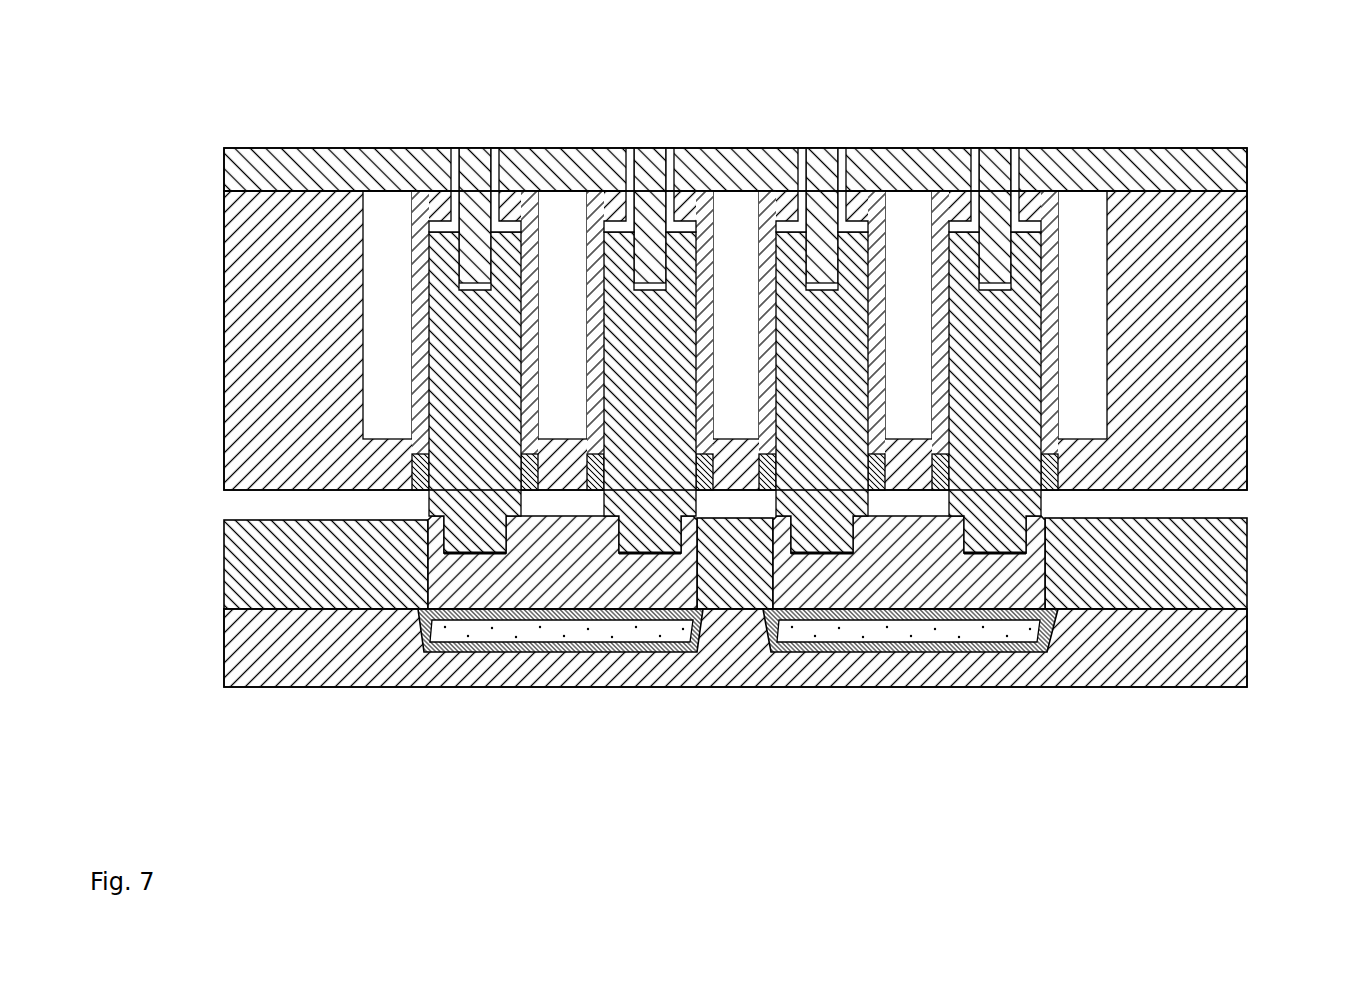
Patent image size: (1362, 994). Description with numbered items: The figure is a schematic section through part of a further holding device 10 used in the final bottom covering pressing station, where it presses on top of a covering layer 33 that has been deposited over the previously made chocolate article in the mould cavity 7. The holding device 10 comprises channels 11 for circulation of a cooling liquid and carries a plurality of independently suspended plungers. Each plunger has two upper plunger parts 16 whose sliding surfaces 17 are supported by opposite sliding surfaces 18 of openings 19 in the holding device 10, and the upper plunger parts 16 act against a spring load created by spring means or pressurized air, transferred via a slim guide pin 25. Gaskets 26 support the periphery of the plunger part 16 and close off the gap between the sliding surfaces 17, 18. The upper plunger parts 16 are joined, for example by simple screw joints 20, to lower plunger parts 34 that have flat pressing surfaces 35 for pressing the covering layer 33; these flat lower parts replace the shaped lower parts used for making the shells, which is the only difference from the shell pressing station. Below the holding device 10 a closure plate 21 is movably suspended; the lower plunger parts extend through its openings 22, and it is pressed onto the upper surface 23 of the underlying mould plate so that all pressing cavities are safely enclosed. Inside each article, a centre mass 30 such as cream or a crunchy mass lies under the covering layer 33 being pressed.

The mould cavity 7 is at (770, 617).
The holding device 10 is at (247, 246).
The channel 11 is at (1085, 220).
The upper plunger part 16 is at (627, 368).
The sliding surface 17 is at (1050, 252).
The sliding surface 18 is at (1045, 288).
The opening 19 is at (1058, 427).
The screw joint 20 is at (618, 545).
The closure plate 21 is at (238, 575).
The opening 22 is at (443, 543).
The upper surface 23 is at (1062, 586).
The guide pin 25 is at (997, 148).
The gasket 26 is at (1058, 468).
The centre mass 30 is at (590, 630).
The covering layer 33 is at (512, 613).
The lower plunger part 34 is at (467, 653).
The flat pressing surface 35 is at (508, 632).